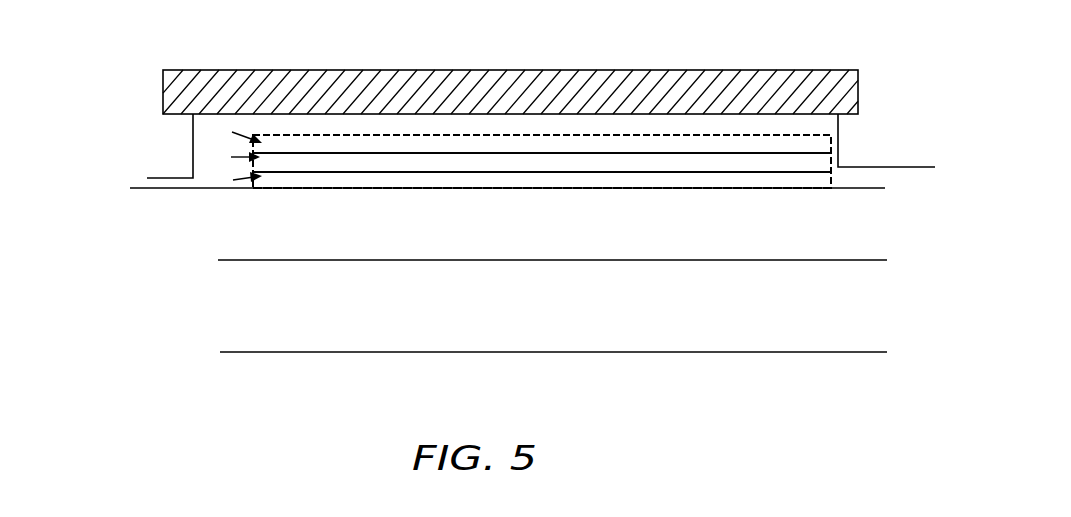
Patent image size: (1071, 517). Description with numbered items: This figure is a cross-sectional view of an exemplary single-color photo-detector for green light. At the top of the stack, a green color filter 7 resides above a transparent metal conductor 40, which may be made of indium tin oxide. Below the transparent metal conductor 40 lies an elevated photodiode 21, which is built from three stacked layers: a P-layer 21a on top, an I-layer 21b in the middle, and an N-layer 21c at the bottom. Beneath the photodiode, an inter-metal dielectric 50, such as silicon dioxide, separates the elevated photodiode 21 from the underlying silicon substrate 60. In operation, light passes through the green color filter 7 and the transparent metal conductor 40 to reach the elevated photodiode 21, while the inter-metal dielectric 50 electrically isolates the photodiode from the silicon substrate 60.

The green color filter 7 is at (588, 92).
The transparent metal conductor 40 is at (350, 129).
The elevated photodiode 21 is at (662, 143).
The P-layer 21a is at (213, 128).
The I-layer 21b is at (212, 153).
The N-layer 21c is at (215, 178).
The inter-metal dielectric 50 is at (508, 224).
The silicon substrate 60 is at (524, 337).